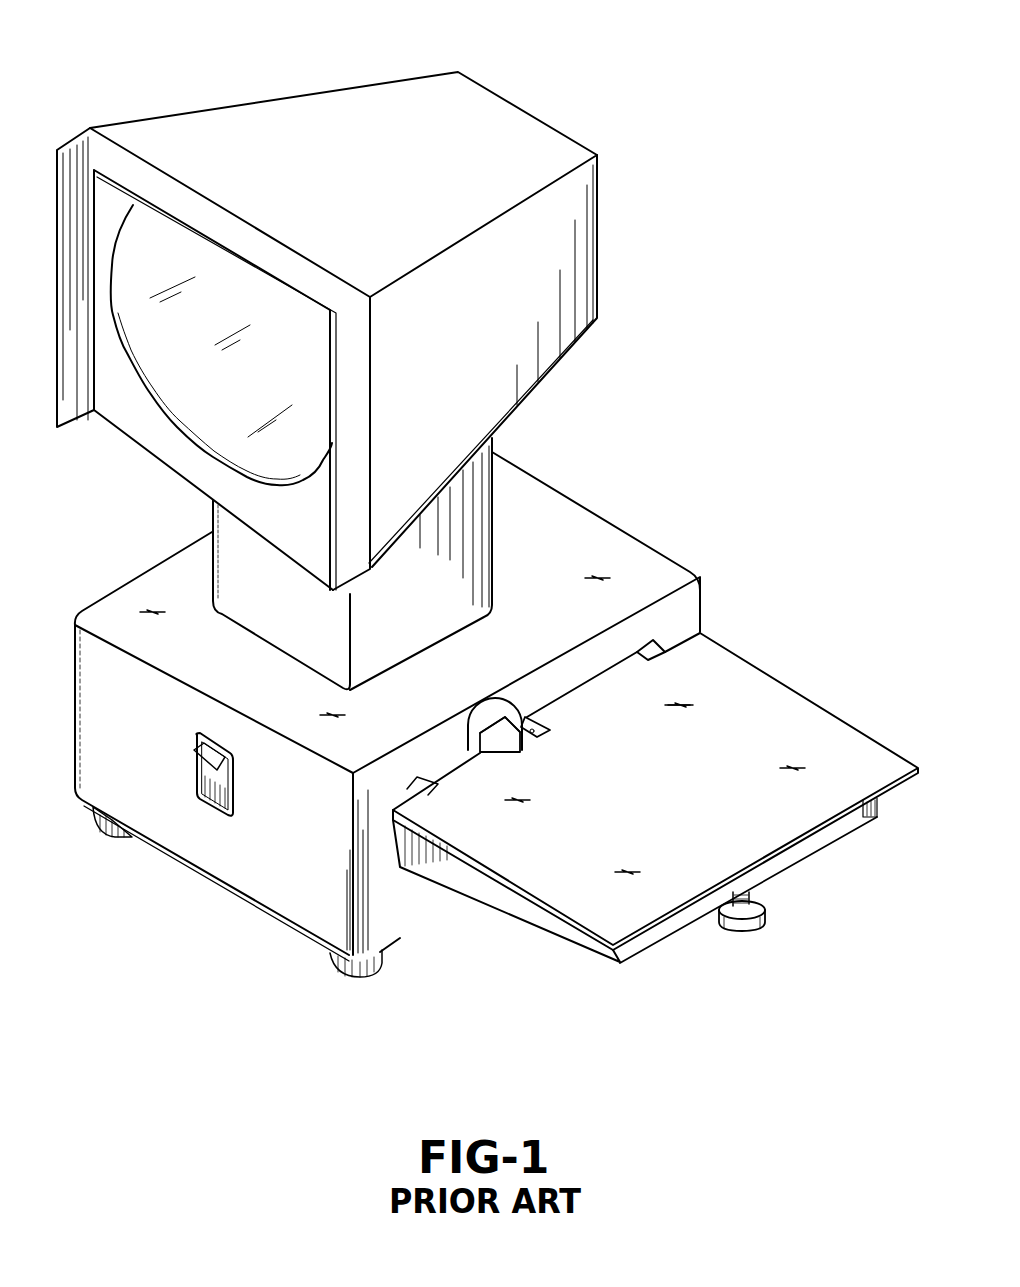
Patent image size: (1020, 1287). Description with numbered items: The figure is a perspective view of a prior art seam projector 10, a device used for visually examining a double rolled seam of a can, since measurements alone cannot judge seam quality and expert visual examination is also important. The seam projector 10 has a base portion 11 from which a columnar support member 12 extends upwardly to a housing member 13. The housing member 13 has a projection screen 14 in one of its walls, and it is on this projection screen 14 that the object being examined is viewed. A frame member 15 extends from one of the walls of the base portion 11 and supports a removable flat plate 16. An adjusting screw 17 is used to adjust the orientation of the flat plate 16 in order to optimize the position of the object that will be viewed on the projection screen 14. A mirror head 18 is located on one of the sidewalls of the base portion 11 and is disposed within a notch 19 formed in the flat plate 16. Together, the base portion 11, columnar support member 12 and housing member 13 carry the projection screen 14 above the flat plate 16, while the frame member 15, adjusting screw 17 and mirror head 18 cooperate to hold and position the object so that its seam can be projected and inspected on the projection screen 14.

The seam projector 10 is at (648, 109).
The base portion 11 is at (303, 905).
The columnar support member 12 is at (468, 556).
The housing member 13 is at (283, 147).
The projection screen 14 is at (217, 407).
The frame member 15 is at (538, 913).
The flat plate 16 is at (753, 703).
The adjusting screw 17 is at (748, 930).
The mirror head 18 is at (500, 738).
The notch 19 is at (533, 735).